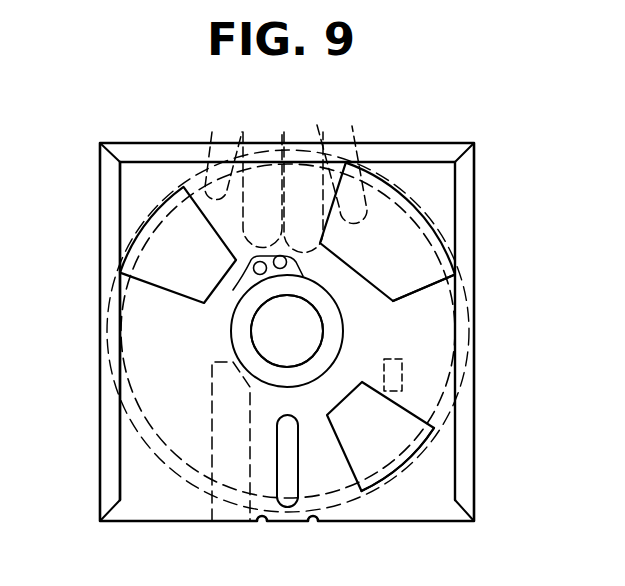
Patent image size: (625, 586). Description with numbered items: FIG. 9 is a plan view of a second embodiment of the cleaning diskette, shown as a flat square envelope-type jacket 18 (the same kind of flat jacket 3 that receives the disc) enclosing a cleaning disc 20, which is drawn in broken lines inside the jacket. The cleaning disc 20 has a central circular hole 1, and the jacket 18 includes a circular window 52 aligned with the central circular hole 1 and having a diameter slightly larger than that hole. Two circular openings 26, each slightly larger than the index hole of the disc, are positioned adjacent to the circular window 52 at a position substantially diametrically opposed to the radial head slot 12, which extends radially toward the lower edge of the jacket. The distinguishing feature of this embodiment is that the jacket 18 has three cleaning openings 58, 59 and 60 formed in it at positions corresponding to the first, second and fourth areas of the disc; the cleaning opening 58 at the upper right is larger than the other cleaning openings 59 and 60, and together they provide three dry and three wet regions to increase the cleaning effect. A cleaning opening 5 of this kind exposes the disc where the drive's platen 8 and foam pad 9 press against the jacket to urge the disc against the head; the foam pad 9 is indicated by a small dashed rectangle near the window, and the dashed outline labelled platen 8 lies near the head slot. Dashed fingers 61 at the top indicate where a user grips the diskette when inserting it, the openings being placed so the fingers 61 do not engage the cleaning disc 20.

The central circular hole 1 is at (318, 331).
The jacket 3 is at (100, 200).
The cleaning opening 5 is at (142, 416).
The platen 8 is at (212, 425).
The foam pad 9 is at (402, 376).
The radial head slot 12 is at (296, 487).
The jacket 18 is at (102, 280).
The cleaning disc 20 is at (453, 258).
The circular openings 26 is at (233, 290).
The circular window 52 is at (336, 345).
The cleaning opening 58 is at (419, 231).
The cleaning opening 59 is at (122, 258).
The cleaning opening 60 is at (427, 427).
The fingers 61 is at (350, 143).